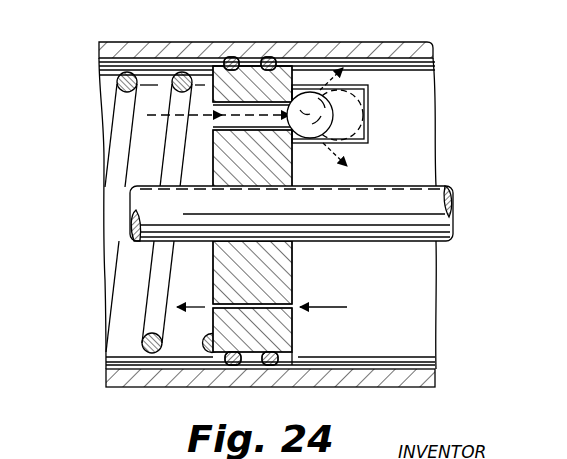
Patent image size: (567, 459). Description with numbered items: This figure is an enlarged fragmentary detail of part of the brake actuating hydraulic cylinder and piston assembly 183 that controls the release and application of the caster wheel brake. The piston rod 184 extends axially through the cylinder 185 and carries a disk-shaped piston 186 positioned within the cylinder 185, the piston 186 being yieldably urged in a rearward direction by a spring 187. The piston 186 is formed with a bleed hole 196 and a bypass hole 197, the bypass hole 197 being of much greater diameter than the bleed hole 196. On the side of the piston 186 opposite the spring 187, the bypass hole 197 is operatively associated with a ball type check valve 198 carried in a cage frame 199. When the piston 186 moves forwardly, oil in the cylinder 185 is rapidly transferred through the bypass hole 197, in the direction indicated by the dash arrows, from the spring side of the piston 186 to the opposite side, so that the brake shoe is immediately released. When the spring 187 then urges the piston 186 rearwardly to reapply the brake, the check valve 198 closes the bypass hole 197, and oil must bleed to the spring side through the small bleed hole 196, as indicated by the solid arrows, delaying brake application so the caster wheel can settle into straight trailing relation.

The hydraulic cylinder and piston assembly 183 is at (112, 397).
The piston rod 184 is at (423, 233).
The cylinder 185 is at (190, 388).
The piston 186 is at (280, 277).
The spring 187 is at (147, 325).
The bleed hole 196 is at (285, 313).
The bypass hole 197 is at (224, 113).
The ball type check valve 198 is at (313, 100).
The cage frame 199 is at (369, 118).